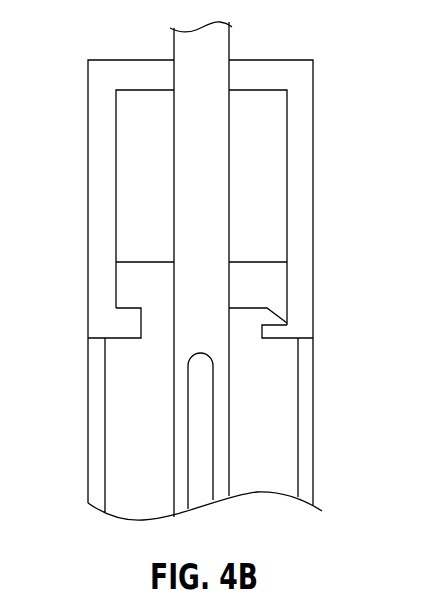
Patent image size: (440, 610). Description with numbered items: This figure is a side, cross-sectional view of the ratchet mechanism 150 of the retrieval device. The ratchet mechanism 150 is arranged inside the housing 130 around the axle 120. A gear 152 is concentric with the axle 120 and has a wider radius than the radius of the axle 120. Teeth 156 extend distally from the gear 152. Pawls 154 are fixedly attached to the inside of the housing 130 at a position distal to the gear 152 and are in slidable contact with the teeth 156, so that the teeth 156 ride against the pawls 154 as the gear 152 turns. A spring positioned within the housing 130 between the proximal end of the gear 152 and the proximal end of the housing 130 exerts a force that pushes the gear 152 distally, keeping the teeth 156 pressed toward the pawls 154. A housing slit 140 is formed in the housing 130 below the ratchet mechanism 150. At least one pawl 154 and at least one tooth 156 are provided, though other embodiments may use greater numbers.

The axle 120 is at (222, 448).
The housing 130 is at (302, 95).
The housing slit 140 is at (202, 404).
The ratchet mechanism 150 is at (265, 185).
The gear 152 is at (265, 286).
The pawl 154 is at (128, 323).
The tooth 156 is at (280, 316).